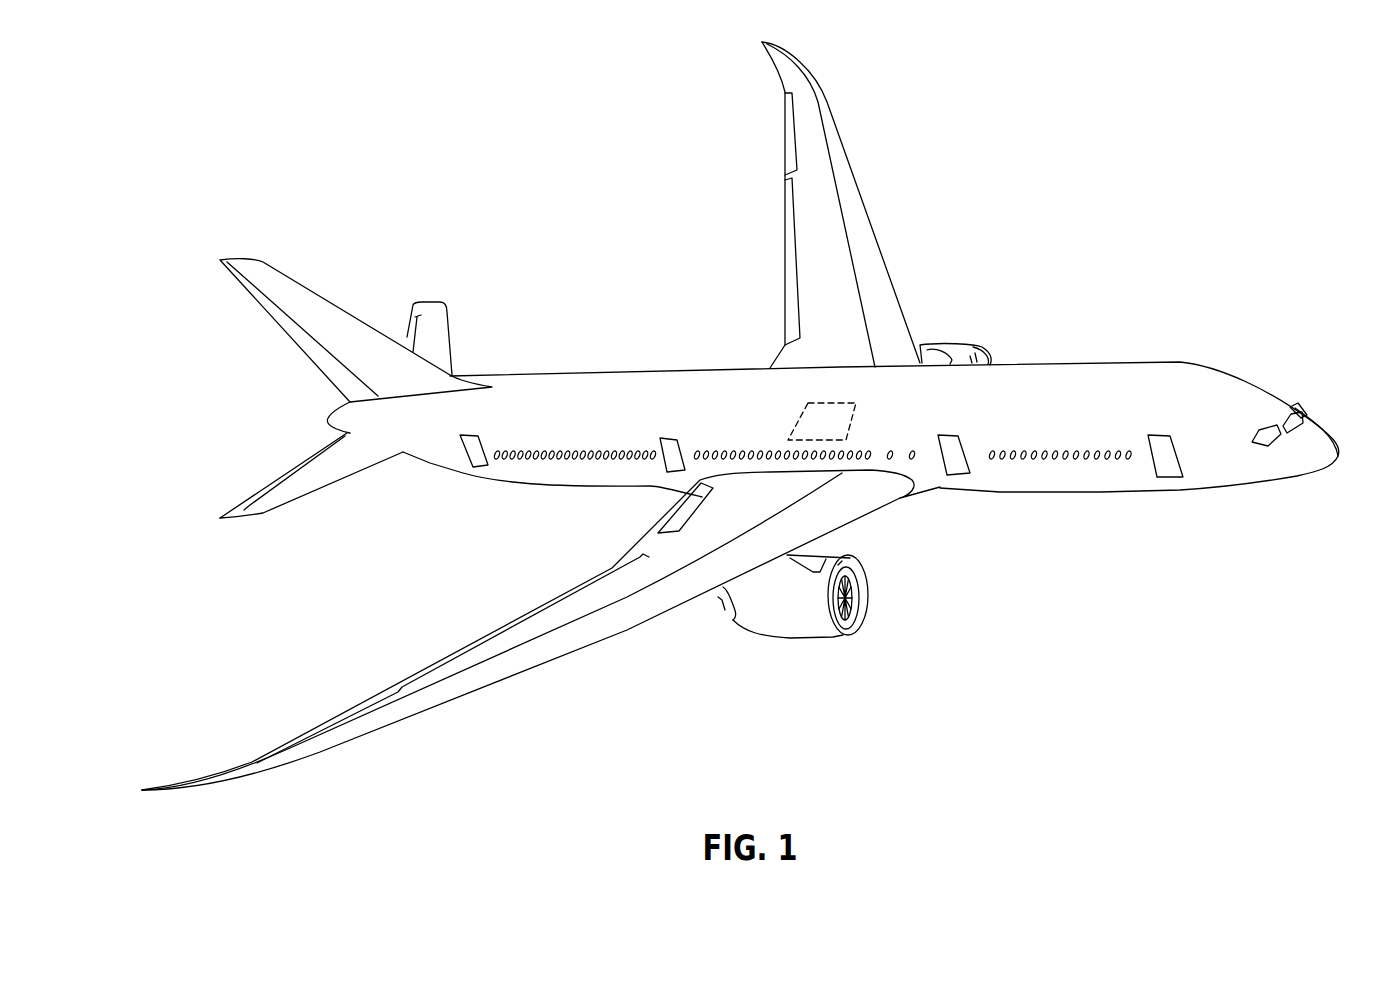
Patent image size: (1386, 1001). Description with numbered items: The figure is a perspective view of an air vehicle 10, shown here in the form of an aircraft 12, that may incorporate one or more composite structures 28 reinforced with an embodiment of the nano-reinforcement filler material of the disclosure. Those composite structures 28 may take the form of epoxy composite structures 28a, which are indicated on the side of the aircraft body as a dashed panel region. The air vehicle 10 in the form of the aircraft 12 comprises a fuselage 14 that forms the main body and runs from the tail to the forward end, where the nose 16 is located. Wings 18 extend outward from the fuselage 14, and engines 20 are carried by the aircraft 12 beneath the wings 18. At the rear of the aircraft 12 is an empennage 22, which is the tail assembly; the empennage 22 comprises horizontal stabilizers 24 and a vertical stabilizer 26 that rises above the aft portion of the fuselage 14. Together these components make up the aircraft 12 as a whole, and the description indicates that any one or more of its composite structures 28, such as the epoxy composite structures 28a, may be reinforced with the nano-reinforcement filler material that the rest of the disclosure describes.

The air vehicle 10 is at (1090, 160).
The aircraft 12 is at (1135, 357).
The fuselage 14 is at (1063, 378).
The nose 16 is at (1313, 457).
The wings 18 is at (827, 126).
The engines 20 is at (960, 355).
The empennage 22 is at (207, 282).
The horizontal stabilizers 24 is at (440, 335).
The vertical stabilizer 26 is at (312, 312).
The composite structures 28 is at (800, 407).
The epoxy composite structures 28a is at (785, 428).